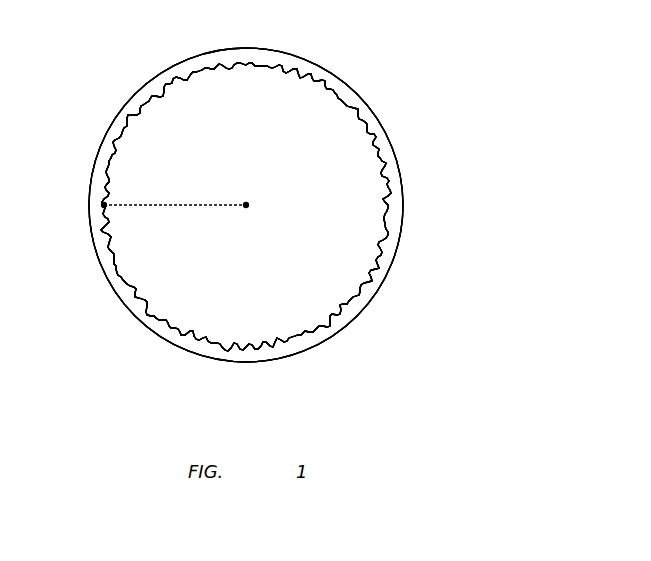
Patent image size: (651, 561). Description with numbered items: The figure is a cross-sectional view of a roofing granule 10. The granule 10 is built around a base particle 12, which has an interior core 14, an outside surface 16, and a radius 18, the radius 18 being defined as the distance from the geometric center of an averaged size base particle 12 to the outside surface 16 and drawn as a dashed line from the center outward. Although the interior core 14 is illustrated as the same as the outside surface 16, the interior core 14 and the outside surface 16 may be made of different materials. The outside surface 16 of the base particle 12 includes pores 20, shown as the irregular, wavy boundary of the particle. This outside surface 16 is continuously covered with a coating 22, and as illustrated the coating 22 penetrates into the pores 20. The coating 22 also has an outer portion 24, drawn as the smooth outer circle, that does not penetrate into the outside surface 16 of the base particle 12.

The granule 10 is at (459, 45).
The base particle 12 is at (341, 111).
The interior core 14 is at (325, 262).
The outside surface 16 is at (386, 192).
The radius 18 is at (144, 199).
The pores 20 is at (136, 114).
The coating 22 is at (383, 147).
The outer portion 24 is at (404, 219).